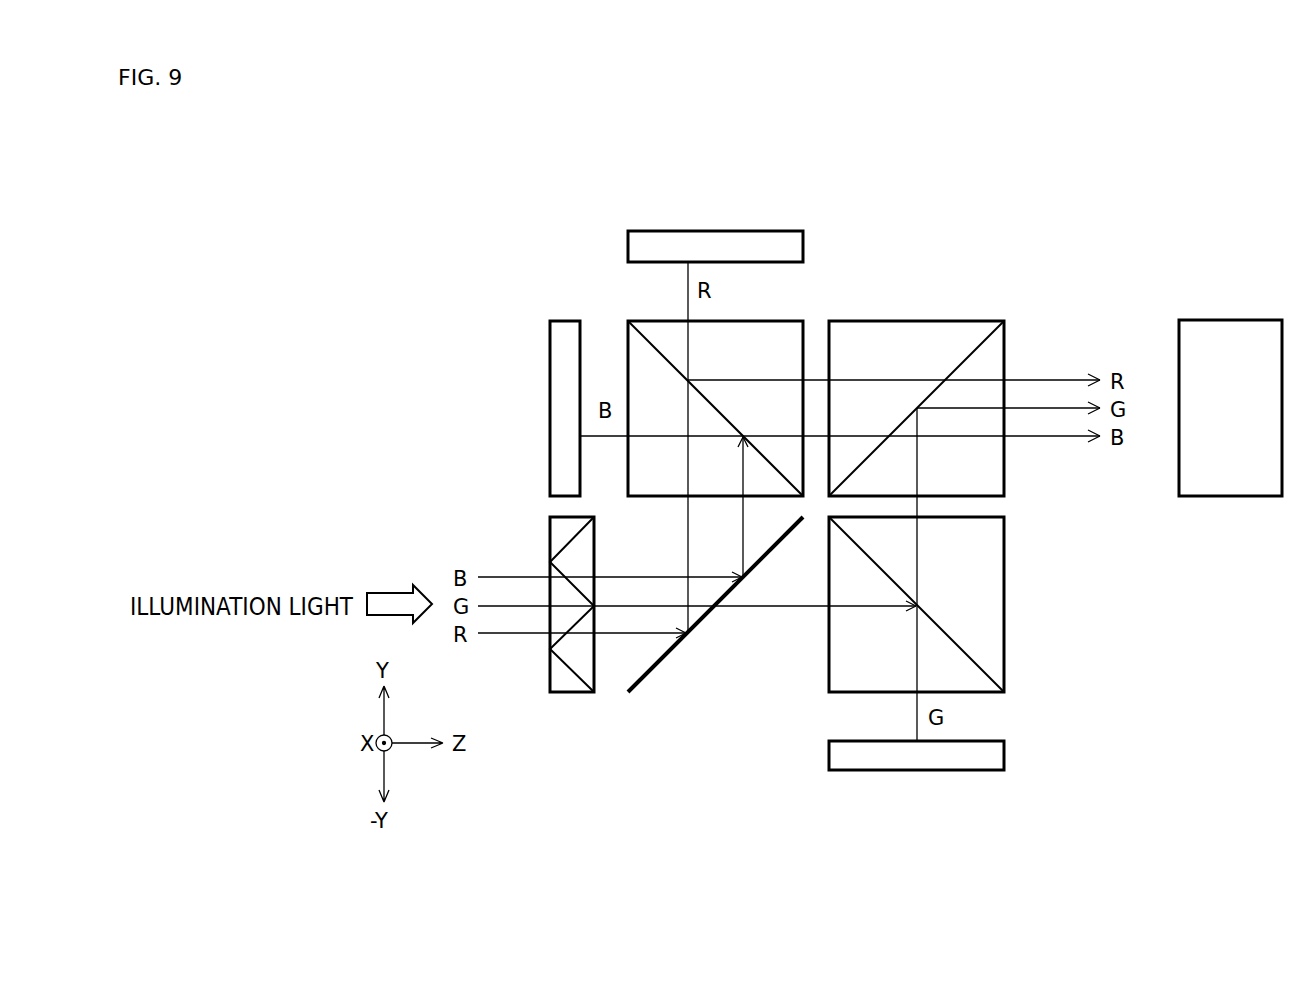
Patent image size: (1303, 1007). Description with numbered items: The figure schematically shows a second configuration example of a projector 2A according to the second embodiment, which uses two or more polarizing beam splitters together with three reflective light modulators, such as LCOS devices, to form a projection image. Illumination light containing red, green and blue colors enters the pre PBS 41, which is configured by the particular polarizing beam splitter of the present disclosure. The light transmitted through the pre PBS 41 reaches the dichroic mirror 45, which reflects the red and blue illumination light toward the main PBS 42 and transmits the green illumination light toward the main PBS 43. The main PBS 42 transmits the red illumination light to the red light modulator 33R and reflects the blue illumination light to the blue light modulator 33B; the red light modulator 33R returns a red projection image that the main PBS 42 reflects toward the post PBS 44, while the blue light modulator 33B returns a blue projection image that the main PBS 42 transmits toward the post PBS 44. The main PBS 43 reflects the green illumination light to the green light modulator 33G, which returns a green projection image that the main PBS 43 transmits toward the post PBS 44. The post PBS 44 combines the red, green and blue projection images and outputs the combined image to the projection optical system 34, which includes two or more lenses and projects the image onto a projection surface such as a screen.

The projector 2A is at (545, 203).
The red light modulator 33R is at (716, 231).
The blue light modulator 33B is at (563, 320).
The green light modulator 33G is at (918, 771).
The projection optical system 34 is at (1230, 320).
The pre PBS 41 is at (574, 693).
The main PBS 42 is at (793, 320).
The main PBS 43 is at (1005, 604).
The post PBS 44 is at (965, 320).
The dichroic mirror 45 is at (667, 655).